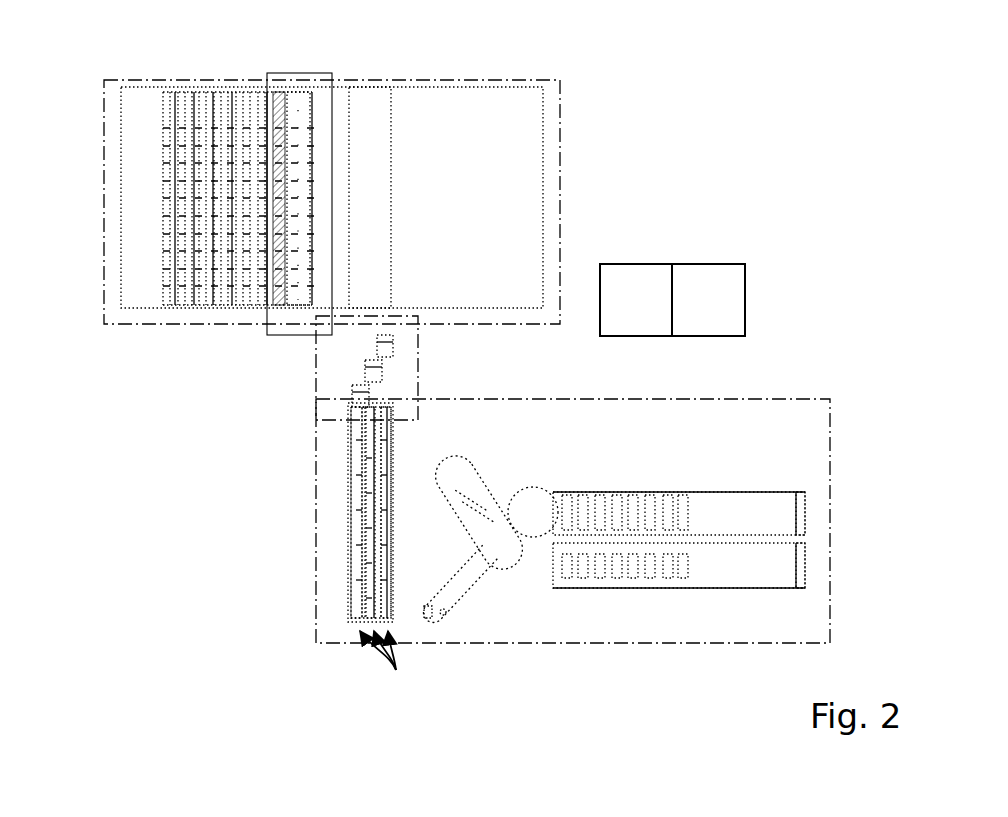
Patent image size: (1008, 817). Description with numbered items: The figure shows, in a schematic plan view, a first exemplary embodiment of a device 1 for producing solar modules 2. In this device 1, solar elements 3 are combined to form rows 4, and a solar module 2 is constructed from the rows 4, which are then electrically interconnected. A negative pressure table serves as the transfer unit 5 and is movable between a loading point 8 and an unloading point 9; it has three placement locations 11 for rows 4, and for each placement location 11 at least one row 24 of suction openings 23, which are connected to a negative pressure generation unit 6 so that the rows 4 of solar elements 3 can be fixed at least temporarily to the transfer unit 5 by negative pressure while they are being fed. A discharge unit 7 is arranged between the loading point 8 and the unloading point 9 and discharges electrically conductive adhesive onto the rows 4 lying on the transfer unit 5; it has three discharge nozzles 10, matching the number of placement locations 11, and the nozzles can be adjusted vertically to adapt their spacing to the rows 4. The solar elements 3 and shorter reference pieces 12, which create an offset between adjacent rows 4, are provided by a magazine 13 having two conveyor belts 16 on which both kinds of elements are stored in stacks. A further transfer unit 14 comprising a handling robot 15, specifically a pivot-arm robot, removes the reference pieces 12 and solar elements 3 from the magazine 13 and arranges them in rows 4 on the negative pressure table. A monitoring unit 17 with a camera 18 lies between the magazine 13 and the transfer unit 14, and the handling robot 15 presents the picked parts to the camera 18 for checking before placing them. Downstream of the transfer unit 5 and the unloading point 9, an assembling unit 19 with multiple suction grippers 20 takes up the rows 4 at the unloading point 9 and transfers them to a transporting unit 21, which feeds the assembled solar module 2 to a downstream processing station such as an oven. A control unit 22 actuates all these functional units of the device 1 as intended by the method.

The device 1 is at (592, 226).
The solar module 2 is at (188, 102).
The solar element 3 is at (617, 510).
The row 4 is at (382, 668).
The transfer unit 5 is at (351, 522).
The negative pressure generation unit 6 is at (636, 300).
The discharge unit 7 is at (316, 368).
The loading point 8 is at (331, 542).
The unloading point 9 is at (370, 197).
The discharge nozzle 10 is at (393, 345).
The placement location 11 is at (355, 497).
The reference piece 12 is at (685, 566).
The magazine 13 is at (691, 527).
The transfer unit 14 is at (512, 532).
The handling robot 15 is at (498, 522).
The conveyor belt 16 is at (788, 510).
The monitoring unit 17 is at (549, 578).
The camera 18 is at (533, 545).
The assembling unit 19 is at (283, 74).
The gripper 20 is at (296, 133).
The transporting unit 21 is at (121, 266).
The control unit 22 is at (708, 300).
The suction opening 23 is at (370, 512).
The row of suction openings 24 is at (386, 512).